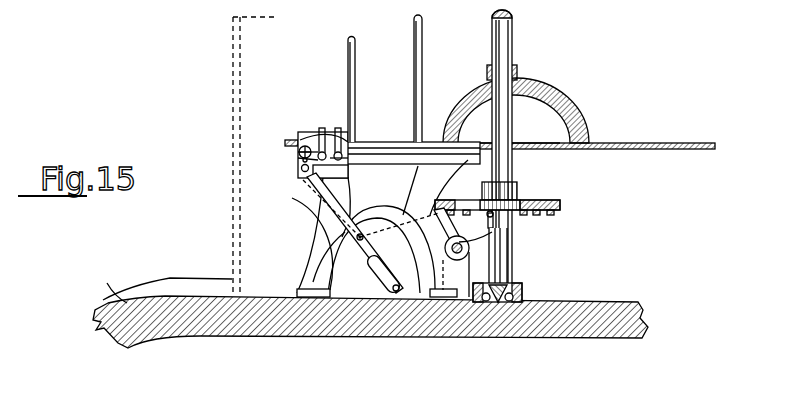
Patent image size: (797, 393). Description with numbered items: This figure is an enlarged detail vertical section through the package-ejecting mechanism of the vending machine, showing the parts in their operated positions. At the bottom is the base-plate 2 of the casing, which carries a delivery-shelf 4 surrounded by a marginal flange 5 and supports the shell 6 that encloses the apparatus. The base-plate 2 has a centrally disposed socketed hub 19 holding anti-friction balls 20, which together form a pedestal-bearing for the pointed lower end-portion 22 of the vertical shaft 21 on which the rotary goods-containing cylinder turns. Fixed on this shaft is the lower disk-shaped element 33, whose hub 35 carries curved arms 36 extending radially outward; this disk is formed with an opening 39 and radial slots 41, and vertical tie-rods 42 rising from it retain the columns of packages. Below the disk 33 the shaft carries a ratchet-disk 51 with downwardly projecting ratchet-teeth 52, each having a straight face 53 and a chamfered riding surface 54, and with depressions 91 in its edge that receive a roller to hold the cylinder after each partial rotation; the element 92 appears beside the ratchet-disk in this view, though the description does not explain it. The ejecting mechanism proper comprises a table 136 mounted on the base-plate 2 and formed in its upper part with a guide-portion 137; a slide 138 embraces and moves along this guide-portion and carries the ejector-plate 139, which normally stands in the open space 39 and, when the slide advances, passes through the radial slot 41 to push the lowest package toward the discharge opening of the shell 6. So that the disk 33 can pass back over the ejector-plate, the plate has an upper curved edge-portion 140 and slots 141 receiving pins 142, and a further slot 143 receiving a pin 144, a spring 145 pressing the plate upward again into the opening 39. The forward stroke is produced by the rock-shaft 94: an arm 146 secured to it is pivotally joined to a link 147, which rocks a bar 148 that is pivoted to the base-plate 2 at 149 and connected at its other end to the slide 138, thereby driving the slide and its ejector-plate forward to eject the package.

The base-plate 2 is at (605, 328).
The delivery-shelf 4 is at (110, 282).
The marginal flange 5 is at (170, 278).
The shell 6 is at (233, 40).
The socketed hub 19 is at (523, 288).
The anti-friction balls 20 is at (484, 302).
The vertical shaft 21 is at (502, 34).
The lower end-portion 22 is at (500, 302).
The lower disk-shaped element 33 is at (282, 133).
The hub 35 is at (524, 56).
The curved arms 36 is at (478, 94).
The opening 39 is at (533, 143).
The radial slot 41 is at (427, 143).
The vertical tie-rods 42 is at (414, 50).
The ratchet-disk 51 is at (545, 205).
The ratchet-teeth 52 is at (530, 213).
The straight face 53 is at (493, 218).
The chamfered riding surface 54 is at (537, 215).
The depressions 91 is at (477, 200).
The bell crank lever 92 is at (462, 275).
The rock-shaft 94 is at (466, 252).
The table 136 is at (340, 238).
The guide-portion 137 is at (382, 156).
The slide 138 is at (317, 181).
The ejector-plate 139 is at (302, 167).
The upper curved edge-portion 140 is at (320, 134).
The slots 141 is at (336, 132).
The pins 142 is at (340, 157).
The slot 143 is at (304, 134).
The pin 144 is at (300, 152).
The spring 145 is at (300, 158).
The arm 146 is at (492, 226).
The link 147 is at (322, 282).
The bar 148 is at (378, 262).
The pivot 149 is at (395, 292).